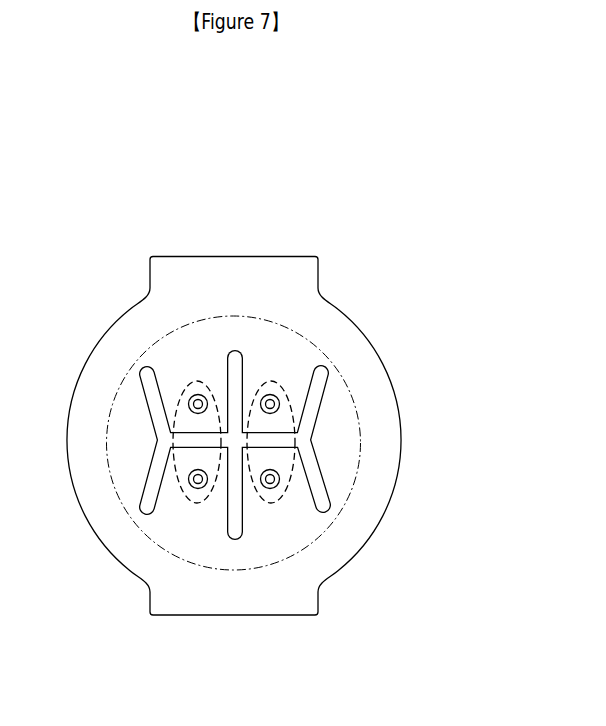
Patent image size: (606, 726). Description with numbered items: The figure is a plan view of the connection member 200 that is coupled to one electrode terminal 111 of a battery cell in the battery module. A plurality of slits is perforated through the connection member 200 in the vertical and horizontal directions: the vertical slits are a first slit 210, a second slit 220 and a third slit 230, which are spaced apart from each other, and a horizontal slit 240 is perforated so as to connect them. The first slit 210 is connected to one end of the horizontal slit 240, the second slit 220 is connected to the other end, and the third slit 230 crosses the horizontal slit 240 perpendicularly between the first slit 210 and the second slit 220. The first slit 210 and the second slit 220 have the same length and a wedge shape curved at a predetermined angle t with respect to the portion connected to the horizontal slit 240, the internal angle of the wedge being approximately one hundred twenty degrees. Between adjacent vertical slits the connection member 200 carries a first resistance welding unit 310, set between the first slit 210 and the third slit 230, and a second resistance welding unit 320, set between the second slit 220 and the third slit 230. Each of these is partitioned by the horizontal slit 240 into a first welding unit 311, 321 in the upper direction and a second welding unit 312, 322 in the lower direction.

The connection member 200 is at (238, 141).
The electrode terminal 111 is at (301, 320).
The first slit 210 is at (333, 519).
The second slit 220 is at (142, 371).
The third slit 230 is at (229, 349).
The horizontal slit 240 is at (216, 448).
The first resistance welding unit 310 is at (276, 515).
The first welding unit 311 is at (279, 396).
The second welding unit 312 is at (281, 479).
The second resistance welding unit 320 is at (192, 512).
The first welding unit 321 is at (188, 407).
The second welding unit 322 is at (188, 479).
The predetermined angle t is at (317, 457).